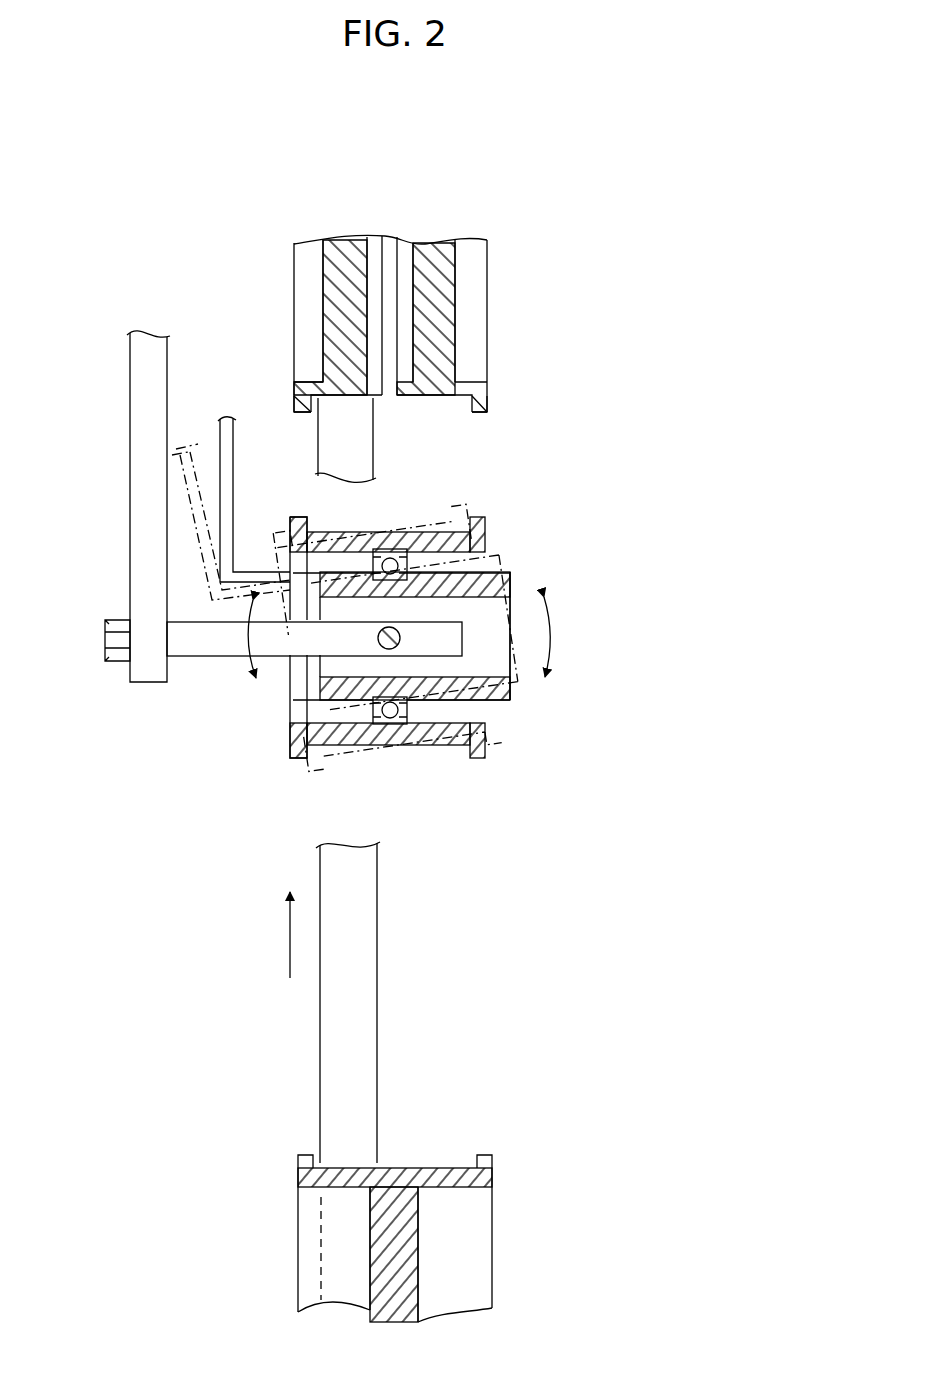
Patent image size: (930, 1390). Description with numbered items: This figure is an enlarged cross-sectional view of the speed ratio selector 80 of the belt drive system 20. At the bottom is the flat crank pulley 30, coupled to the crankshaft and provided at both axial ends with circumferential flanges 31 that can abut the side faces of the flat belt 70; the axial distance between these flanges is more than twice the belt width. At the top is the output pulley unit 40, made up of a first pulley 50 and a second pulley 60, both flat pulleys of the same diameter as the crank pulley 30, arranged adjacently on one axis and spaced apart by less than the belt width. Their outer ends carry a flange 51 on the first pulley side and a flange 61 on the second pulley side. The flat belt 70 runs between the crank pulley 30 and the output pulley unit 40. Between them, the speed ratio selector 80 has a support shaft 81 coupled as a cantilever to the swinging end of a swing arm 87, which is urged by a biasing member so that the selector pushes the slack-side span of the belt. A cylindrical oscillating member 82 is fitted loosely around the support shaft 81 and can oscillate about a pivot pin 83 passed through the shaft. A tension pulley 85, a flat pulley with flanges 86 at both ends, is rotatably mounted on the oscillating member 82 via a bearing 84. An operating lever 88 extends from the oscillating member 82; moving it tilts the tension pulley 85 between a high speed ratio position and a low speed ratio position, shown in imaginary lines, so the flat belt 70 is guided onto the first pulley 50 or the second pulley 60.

The belt drive system 20 is at (131, 220).
The output pulley unit 40 is at (448, 166).
The second pulley 60 is at (337, 240).
The first pulley 50 is at (434, 243).
The flange 61 is at (300, 414).
The flange 51 is at (482, 414).
The swing arm 87 is at (130, 402).
The operating lever 88 is at (199, 440).
The speed ratio selector 80 is at (523, 578).
The tension pulley 85 is at (462, 523).
The flanges 86 is at (298, 758).
The bearing 84 is at (403, 728).
The pivot pin 83 is at (400, 638).
The oscillating member 82 is at (513, 676).
The support shaft 81 is at (195, 660).
The flat belt 70 is at (378, 930).
The crank pulley 30 is at (502, 1234).
The flanges 31 is at (305, 1154).